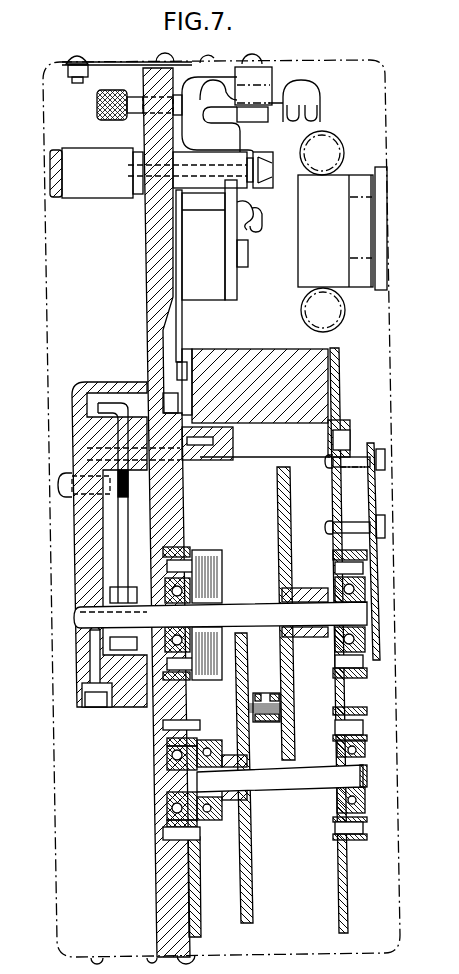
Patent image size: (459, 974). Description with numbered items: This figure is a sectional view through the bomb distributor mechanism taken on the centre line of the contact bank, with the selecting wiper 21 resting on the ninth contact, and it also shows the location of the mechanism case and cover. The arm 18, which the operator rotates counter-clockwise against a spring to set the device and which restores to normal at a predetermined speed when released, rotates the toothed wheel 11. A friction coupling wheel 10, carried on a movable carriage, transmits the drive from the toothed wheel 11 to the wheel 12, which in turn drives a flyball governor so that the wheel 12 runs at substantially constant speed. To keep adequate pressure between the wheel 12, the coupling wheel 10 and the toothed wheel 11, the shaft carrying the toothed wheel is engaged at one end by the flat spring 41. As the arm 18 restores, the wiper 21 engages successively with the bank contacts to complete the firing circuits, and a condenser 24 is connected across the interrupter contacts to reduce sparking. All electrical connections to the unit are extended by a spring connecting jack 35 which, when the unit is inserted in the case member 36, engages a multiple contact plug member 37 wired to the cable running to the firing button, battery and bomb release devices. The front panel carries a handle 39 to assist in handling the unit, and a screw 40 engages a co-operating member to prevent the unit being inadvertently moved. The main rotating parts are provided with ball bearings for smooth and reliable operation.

The friction coupling wheel 10 is at (259, 692).
The toothed wheel 11 is at (277, 502).
The wheel 12 is at (254, 894).
The arm 18 is at (77, 553).
The wiper 21 is at (130, 492).
The condenser 24 is at (338, 362).
The spring connecting jack 35 is at (207, 87).
The case member 36 is at (386, 100).
The multiple contact plug member 37 is at (284, 80).
The handle 39 is at (50, 173).
The screw 40 is at (110, 89).
The flat spring 41 is at (378, 592).